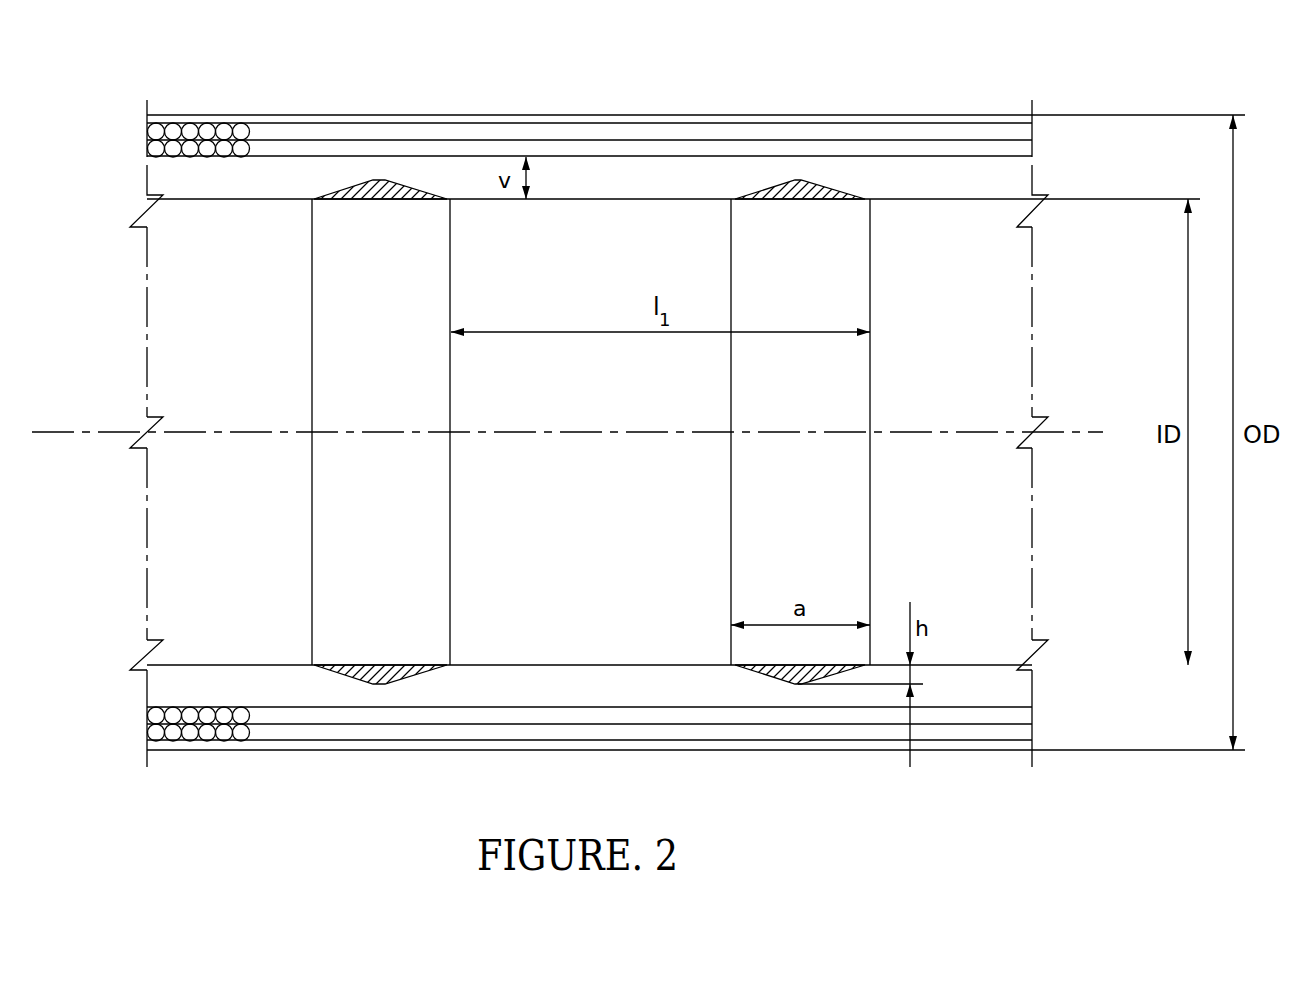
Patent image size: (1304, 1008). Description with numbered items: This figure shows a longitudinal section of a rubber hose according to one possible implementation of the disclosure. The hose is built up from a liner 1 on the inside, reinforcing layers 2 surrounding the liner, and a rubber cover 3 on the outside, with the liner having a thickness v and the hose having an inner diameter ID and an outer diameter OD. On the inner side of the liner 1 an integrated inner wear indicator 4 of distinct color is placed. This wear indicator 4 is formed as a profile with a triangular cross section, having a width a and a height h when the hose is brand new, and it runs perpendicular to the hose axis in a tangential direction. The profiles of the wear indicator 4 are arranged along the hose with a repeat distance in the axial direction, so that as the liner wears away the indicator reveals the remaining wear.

The hose liner 1 is at (606, 170).
The reinforcing layer 2 is at (205, 118).
The cover 3 is at (470, 107).
The distinctly colored wear indicator 4 is at (359, 205).